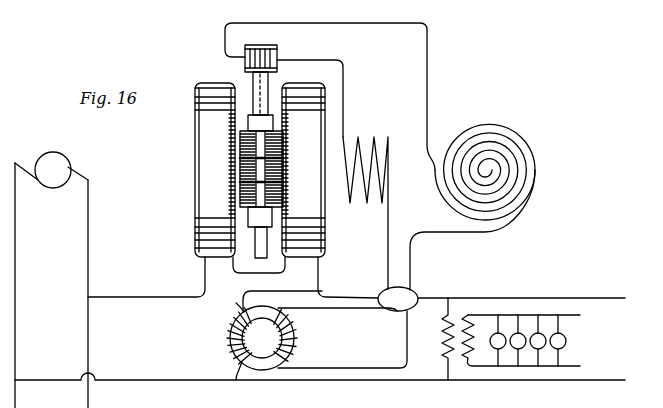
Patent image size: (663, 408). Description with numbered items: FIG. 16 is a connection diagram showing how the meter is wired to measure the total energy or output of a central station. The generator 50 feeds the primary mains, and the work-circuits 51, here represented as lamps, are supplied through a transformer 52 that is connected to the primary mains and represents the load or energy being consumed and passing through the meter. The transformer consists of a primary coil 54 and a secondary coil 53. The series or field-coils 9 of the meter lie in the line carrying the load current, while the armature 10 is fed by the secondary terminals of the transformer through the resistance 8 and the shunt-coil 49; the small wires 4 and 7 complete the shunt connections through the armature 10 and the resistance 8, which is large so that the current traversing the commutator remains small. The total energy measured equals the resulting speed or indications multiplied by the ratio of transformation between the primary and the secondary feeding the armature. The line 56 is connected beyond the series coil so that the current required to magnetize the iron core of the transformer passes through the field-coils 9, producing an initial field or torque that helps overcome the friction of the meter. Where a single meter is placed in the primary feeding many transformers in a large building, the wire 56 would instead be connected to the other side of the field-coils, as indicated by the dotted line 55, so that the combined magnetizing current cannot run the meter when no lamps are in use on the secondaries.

The small wires 4 is at (320, 96).
The small wire 7 is at (395, 294).
The resistance 8 is at (480, 207).
The series or field-coils 9 is at (215, 170).
The armature 10 is at (285, 171).
The shunt-coil 49 is at (365, 204).
The generator 50 is at (51, 182).
The work-circuits 51 is at (544, 340).
The transformer 52 is at (511, 339).
The secondary coil 53 is at (275, 338).
The primary coil 54 is at (226, 336).
The dotted line 55 is at (240, 302).
The line 56 is at (282, 293).